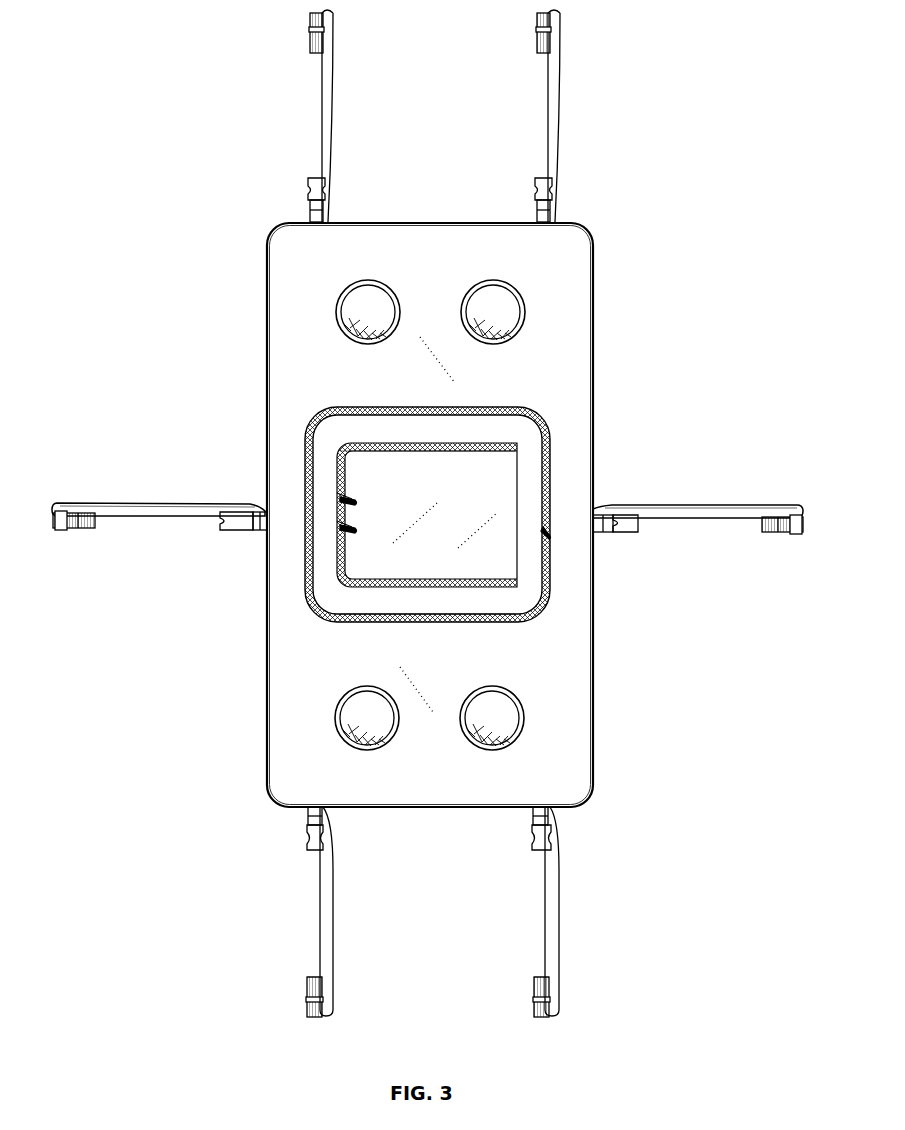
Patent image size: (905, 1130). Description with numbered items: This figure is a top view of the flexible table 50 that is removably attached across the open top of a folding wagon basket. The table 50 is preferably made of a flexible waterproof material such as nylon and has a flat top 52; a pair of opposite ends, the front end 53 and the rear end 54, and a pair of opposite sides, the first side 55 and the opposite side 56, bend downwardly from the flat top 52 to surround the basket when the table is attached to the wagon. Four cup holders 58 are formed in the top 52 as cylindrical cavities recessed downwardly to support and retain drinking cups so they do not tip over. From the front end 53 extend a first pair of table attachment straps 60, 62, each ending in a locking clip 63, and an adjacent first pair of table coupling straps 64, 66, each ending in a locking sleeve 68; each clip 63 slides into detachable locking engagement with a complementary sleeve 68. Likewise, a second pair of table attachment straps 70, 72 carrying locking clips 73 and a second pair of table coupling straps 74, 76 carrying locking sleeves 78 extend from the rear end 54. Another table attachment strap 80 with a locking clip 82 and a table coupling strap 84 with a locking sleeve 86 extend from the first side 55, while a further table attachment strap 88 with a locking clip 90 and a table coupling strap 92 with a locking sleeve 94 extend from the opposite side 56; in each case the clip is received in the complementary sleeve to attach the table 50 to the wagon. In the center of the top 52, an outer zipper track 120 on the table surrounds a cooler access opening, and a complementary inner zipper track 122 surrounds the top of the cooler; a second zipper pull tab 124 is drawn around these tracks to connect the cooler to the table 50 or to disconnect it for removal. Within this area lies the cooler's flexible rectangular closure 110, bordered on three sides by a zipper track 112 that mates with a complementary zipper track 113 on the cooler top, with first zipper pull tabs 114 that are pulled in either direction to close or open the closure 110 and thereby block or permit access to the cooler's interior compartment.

The flexible table 50 is at (262, 636).
The flat top 52 is at (553, 384).
The front end 53 is at (426, 222).
The rear end 54 is at (427, 808).
The first side 55 is at (266, 352).
The opposite side 56 is at (598, 625).
The cup holders 58 is at (353, 298).
The first table attachment strap 60 is at (322, 98).
The first table attachment strap 62 is at (548, 98).
The locking clip 63 is at (310, 35).
The first table coupling strap 64 is at (310, 215).
The first table coupling strap 66 is at (537, 212).
The locking sleeve 68 is at (308, 183).
The second table attachment strap 70 is at (320, 904).
The second table attachment strap 72 is at (545, 905).
The locking clip 73 is at (307, 985).
The second table coupling strap 74 is at (308, 813).
The second table coupling strap 76 is at (533, 813).
The locking sleeve 78 is at (307, 843).
The table attachment strap 80 is at (138, 503).
The locking clip 82 is at (80, 530).
The table coupling strap 84 is at (258, 531).
The locking sleeve 86 is at (222, 531).
The table attachment strap 88 is at (708, 505).
The locking clip 90 is at (785, 532).
The table coupling strap 92 is at (600, 533).
The locking sleeve 94 is at (630, 533).
The flexible rectangular closure 110 is at (493, 463).
The zipper track 112 is at (465, 451).
The complementary zipper track 113 is at (387, 443).
The first zipper pull tabs 114 is at (348, 528).
The outer zipper track 120 is at (475, 623).
The inner zipper track 122 is at (396, 613).
The second zipper pull tab 124 is at (593, 487).